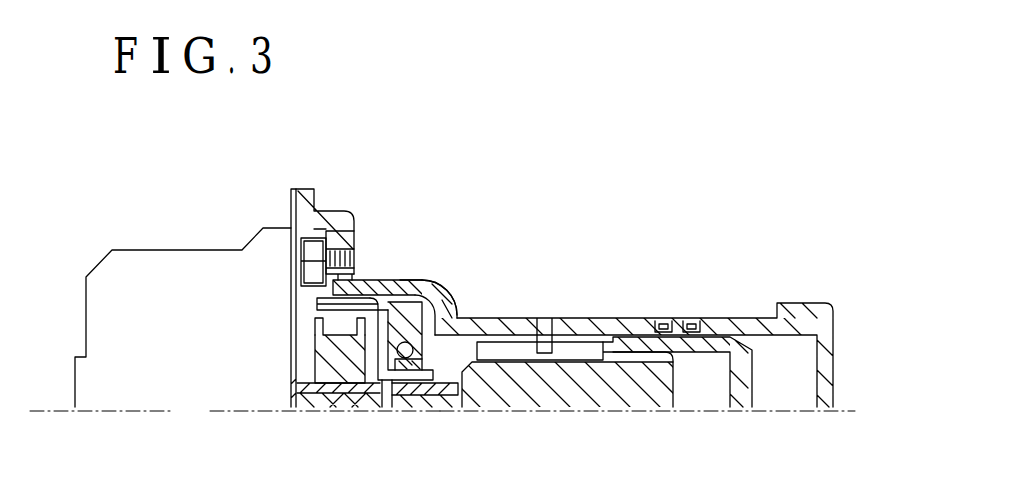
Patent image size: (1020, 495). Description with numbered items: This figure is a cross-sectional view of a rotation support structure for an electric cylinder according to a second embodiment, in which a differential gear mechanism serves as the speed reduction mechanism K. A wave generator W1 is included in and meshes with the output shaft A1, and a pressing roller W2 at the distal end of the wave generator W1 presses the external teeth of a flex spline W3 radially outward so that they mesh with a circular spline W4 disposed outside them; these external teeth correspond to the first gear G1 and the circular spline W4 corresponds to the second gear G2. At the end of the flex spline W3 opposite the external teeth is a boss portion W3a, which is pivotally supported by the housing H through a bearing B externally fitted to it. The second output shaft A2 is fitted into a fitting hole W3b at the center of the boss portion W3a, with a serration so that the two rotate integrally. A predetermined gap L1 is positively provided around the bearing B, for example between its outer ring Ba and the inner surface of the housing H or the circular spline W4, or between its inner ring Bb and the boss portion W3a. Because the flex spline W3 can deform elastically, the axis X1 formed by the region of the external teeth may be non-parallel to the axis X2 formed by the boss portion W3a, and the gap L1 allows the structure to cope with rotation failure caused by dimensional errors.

The second gear G2 is at (320, 303).
The first gear G1 is at (318, 322).
The pressing roller W2 is at (316, 314).
The wave generator W1 is at (312, 365).
The circular spline W4 is at (363, 277).
The flex spline W3 is at (392, 280).
The boss portion W3a is at (420, 388).
The fitting hole W3b is at (403, 383).
The gap L1 is at (382, 298).
The outer ring Ba is at (452, 300).
The bearing B is at (466, 317).
The inner ring Bb is at (412, 357).
The speed reduction mechanism K is at (490, 205).
The housing H is at (718, 316).
The output shaft A1 is at (332, 405).
The second output shaft A2 is at (608, 403).
The axis X1 is at (235, 408).
The axis X2 is at (666, 408).